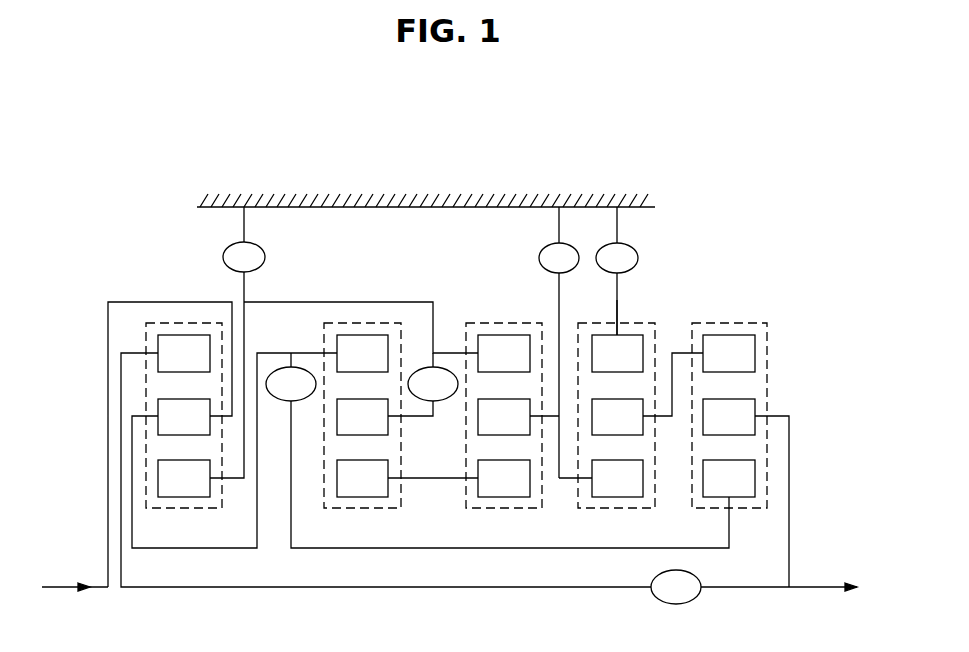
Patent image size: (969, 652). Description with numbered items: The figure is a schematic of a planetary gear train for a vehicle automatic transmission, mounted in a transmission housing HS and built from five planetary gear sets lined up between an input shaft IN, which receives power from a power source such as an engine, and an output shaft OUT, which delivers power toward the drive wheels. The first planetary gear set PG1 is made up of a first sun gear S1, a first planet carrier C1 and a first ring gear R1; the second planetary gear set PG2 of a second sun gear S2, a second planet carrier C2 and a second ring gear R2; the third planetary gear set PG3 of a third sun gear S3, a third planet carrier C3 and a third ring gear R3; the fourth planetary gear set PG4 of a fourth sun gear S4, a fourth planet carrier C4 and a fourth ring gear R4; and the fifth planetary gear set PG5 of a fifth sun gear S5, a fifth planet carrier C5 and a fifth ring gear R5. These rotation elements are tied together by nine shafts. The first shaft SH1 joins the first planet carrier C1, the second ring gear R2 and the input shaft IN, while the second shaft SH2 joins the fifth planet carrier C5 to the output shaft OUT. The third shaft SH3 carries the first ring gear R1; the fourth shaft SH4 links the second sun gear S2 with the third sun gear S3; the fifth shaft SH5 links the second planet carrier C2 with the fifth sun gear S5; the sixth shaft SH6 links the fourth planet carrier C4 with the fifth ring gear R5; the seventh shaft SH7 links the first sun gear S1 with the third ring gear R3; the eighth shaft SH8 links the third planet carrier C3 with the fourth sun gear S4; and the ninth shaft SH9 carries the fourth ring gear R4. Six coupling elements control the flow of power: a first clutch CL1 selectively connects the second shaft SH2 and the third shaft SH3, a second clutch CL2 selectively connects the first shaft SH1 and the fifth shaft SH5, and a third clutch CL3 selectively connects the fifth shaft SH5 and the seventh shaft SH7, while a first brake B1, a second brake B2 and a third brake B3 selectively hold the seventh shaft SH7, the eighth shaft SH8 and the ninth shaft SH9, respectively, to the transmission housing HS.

The transmission housing HS is at (480, 200).
The first brake B1 is at (237, 342).
The second brake B2 is at (559, 342).
The third brake B3 is at (617, 271).
The first clutch CL1 is at (676, 587).
The second clutch CL2 is at (291, 384).
The third clutch CL3 is at (423, 384).
The first planetary gear set PG1 is at (178, 382).
The second planetary gear set PG2 is at (357, 382).
The third planetary gear set PG3 is at (502, 480).
The fourth planetary gear set PG4 is at (607, 480).
The fifth planetary gear set PG5 is at (734, 382).
The first ring gear R1 is at (184, 353).
The first planet carrier C1 is at (184, 417).
The first sun gear S1 is at (184, 478).
The second ring gear R2 is at (362, 353).
The second planet carrier C2 is at (362, 417).
The second sun gear S2 is at (362, 478).
The third ring gear R3 is at (504, 353).
The third planet carrier C3 is at (504, 417).
The third sun gear S3 is at (504, 478).
The fourth ring gear R4 is at (617, 353).
The fourth planet carrier C4 is at (617, 417).
The fourth sun gear S4 is at (617, 478).
The fifth ring gear R5 is at (729, 353).
The fifth planet carrier C5 is at (729, 417).
The fifth sun gear S5 is at (729, 478).
The first shaft SH1 is at (108, 386).
The second shaft SH2 is at (789, 458).
The third shaft SH3 is at (237, 588).
The fourth shaft SH4 is at (436, 479).
The fifth shaft SH5 is at (377, 550).
The sixth shaft SH6 is at (672, 385).
The seventh shaft SH7 is at (390, 302).
The eighth shaft SH8 is at (559, 298).
The ninth shaft SH9 is at (617, 288).
The input shaft IN is at (75, 576).
The output shaft OUT is at (823, 575).